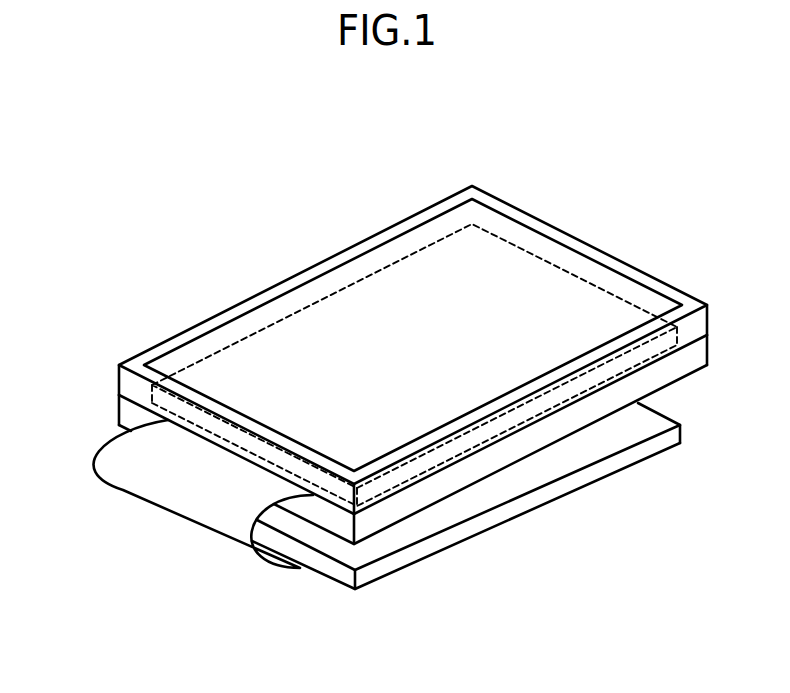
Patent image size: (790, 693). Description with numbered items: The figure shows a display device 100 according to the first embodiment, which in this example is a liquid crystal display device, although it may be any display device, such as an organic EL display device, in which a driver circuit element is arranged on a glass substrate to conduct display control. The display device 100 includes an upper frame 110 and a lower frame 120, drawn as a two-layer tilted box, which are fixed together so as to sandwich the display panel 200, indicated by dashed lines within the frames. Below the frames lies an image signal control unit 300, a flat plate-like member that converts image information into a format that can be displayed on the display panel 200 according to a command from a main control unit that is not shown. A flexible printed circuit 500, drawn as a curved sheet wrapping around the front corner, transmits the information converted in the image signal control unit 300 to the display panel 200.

The display device 100 is at (265, 212).
The upper frame 110 is at (127, 383).
The lower frame 120 is at (127, 413).
The display panel 200 is at (562, 270).
The image signal control unit 300 is at (557, 488).
The flexible printed circuit 500 is at (138, 470).